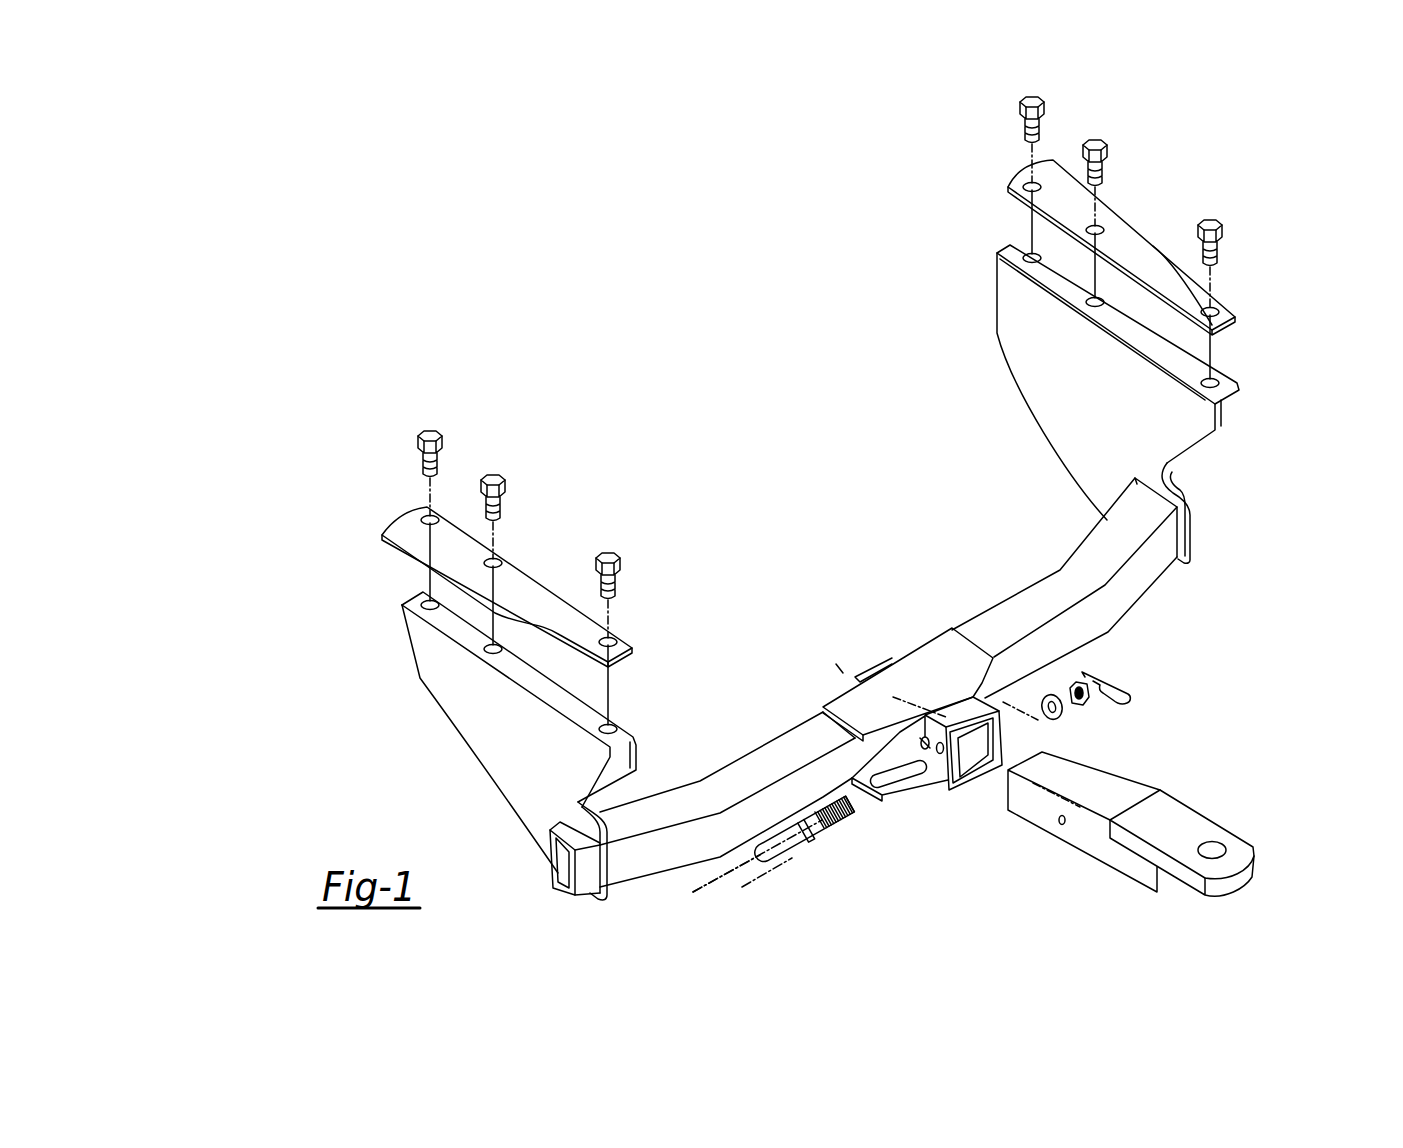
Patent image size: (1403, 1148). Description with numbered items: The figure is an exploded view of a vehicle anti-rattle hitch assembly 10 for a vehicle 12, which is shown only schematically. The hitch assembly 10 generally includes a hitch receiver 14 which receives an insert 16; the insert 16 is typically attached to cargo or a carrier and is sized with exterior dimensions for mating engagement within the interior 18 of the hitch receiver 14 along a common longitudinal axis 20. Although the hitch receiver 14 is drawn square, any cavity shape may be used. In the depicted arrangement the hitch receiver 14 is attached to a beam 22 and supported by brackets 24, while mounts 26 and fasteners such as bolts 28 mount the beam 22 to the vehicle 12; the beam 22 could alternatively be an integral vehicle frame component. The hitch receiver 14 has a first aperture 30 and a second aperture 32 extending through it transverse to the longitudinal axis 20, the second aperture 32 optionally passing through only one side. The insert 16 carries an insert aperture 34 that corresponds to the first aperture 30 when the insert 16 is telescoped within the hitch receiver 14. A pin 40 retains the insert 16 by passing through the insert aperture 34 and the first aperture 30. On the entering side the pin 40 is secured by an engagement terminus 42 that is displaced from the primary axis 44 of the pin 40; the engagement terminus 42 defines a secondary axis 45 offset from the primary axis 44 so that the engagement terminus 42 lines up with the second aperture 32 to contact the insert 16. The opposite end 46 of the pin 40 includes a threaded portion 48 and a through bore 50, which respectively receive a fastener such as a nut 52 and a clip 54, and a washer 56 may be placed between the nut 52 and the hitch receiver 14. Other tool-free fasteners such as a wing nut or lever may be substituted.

The hitch assembly 10 is at (866, 634).
The vehicle 12 is at (532, 595).
The hitch receiver 14 is at (949, 792).
The insert 16 is at (1253, 852).
The interior 18 is at (990, 743).
The longitudinal axis 20 is at (833, 678).
The beam 22 is at (1068, 599).
The brackets 24 is at (943, 685).
The mounts 26 is at (518, 755).
The bolts 28 is at (617, 568).
The first aperture 30 is at (920, 745).
The second aperture 32 is at (942, 750).
The insert aperture 34 is at (1065, 826).
The pin 40 is at (822, 838).
The engagement terminus 42 is at (783, 863).
The primary axis 44 is at (697, 892).
The secondary axis 45 is at (745, 888).
The opposite end 46 is at (847, 819).
The threaded portion 48 is at (833, 805).
The through bore 50 is at (853, 803).
The nut 52 is at (1092, 700).
The clip 54 is at (1130, 685).
The washer 56 is at (1066, 714).